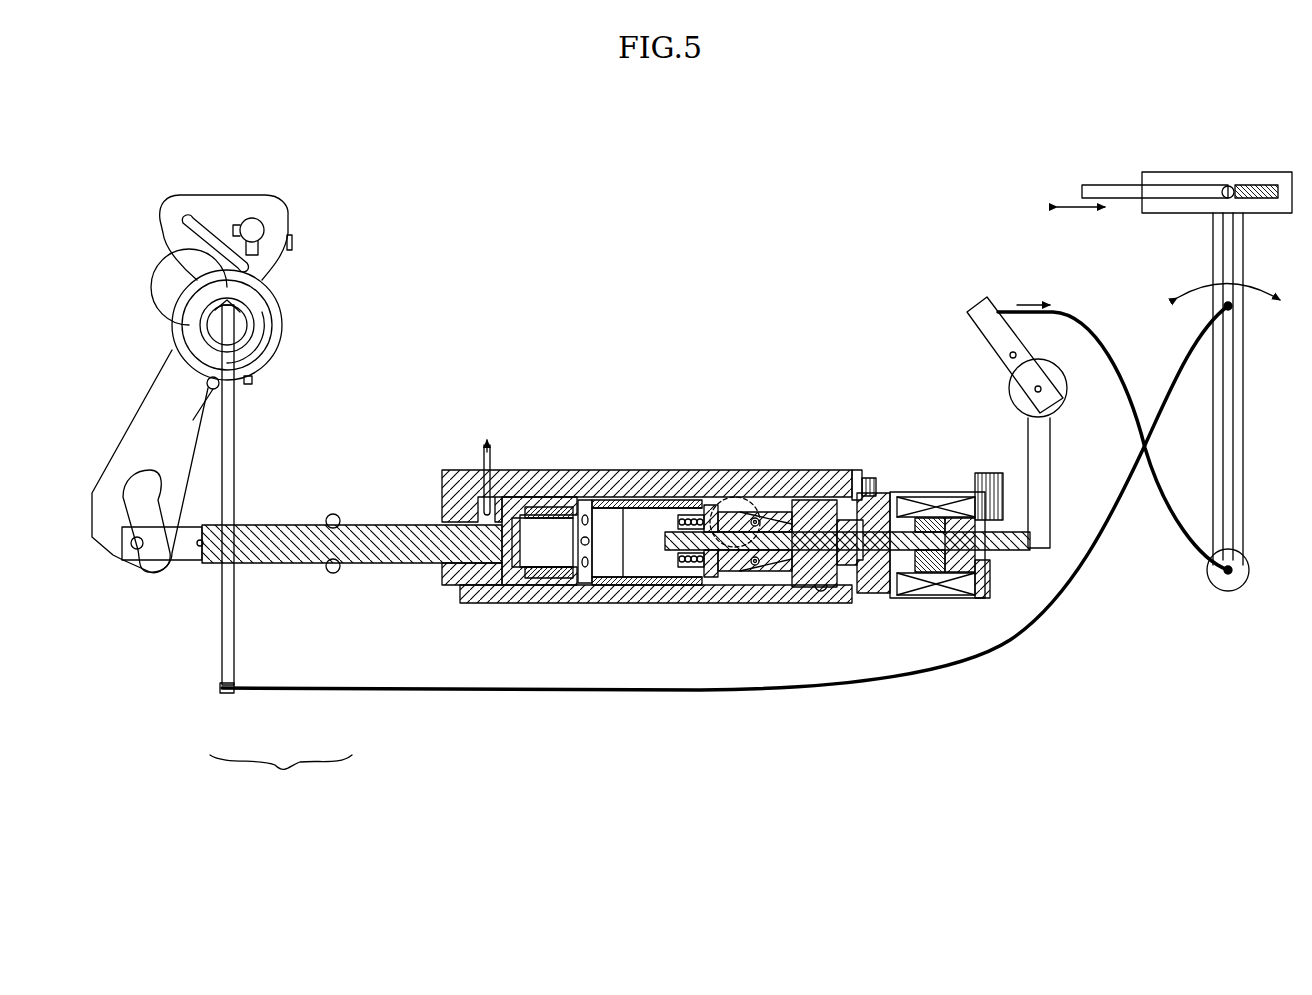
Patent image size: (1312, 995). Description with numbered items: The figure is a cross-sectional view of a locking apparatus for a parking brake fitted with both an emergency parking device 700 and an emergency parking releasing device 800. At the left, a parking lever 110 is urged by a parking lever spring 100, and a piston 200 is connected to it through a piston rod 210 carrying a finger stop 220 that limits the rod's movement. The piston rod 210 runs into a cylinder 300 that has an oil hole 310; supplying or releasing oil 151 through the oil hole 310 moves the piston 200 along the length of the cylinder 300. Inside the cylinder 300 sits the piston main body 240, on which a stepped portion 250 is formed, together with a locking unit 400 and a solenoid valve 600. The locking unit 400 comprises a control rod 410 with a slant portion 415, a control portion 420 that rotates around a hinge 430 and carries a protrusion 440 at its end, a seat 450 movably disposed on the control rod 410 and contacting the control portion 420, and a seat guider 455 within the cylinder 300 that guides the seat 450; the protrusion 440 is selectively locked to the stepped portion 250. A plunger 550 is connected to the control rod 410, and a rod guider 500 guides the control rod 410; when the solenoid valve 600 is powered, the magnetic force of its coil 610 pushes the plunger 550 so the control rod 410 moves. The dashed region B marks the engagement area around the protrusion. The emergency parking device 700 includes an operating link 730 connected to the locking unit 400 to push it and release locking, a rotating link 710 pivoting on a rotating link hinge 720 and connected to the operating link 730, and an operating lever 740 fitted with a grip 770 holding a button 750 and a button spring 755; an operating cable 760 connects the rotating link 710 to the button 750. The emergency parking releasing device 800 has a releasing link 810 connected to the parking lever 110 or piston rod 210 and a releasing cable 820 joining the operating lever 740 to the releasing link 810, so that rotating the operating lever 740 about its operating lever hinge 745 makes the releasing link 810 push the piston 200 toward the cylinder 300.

The parking lever spring 100 is at (255, 323).
The parking lever 110 is at (190, 422).
The oil 151 is at (493, 440).
The piston 200 is at (389, 508).
The piston rod 210 is at (250, 525).
The finger stop 220 is at (328, 517).
The piston main body 240 is at (676, 493).
The stepped portion 250 is at (640, 492).
The cylinder 300 is at (617, 470).
The oil hole 310 is at (478, 470).
The locking unit 400 is at (795, 520).
The control rod 410 is at (780, 560).
The slant portion 415 is at (798, 512).
The control portion 420 is at (745, 580).
The hinge 430 is at (762, 573).
The protrusion 440 is at (730, 505).
The seat 450 is at (695, 588).
The seat guider 455 is at (650, 603).
The rod guider 500 is at (878, 512).
The plunger 550 is at (935, 515).
The solenoid valve 600 is at (920, 605).
The coil 610 is at (940, 596).
The emergency parking device 700 is at (998, 190).
The rotating link 710 is at (982, 312).
The rotating link hinge 720 is at (1010, 355).
The operating link 730 is at (1050, 470).
The operating lever 740 is at (1243, 375).
The operating lever hinge 745 is at (1242, 584).
The button 750 is at (1106, 188).
The button spring 755 is at (1258, 185).
The operating cable 760 is at (1108, 332).
The grip 770 is at (1228, 172).
The emergency parking releasing device 800 is at (281, 775).
The releasing link 810 is at (222, 685).
The releasing cable 820 is at (327, 692).
The detail region B is at (722, 500).